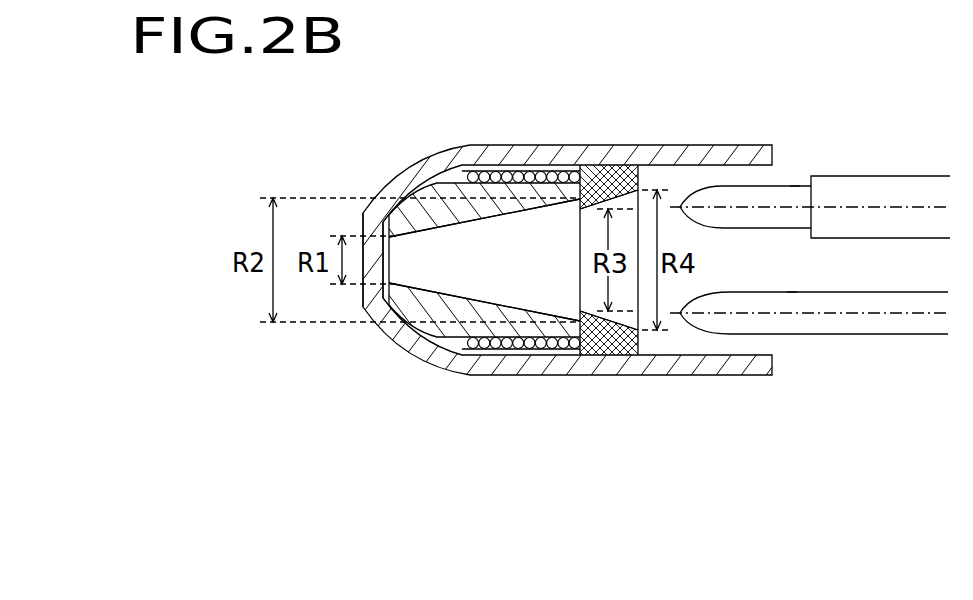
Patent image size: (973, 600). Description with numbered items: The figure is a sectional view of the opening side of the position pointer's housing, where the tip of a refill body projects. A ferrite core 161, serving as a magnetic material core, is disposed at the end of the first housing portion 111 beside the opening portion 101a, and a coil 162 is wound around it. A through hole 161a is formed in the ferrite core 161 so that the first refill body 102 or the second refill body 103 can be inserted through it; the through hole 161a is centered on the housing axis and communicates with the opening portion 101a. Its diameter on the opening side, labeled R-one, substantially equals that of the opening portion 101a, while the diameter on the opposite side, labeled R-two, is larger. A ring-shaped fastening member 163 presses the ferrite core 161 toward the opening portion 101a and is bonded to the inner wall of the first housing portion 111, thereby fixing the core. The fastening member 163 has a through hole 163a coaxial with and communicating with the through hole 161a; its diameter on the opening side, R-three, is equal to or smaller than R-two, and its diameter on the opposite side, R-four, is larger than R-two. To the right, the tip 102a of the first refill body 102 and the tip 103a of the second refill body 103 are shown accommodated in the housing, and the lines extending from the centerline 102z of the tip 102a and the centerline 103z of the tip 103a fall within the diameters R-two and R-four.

The first housing portion 111 is at (570, 155).
The ferrite core 161 is at (427, 205).
The through hole 161a is at (397, 213).
The coil 162 is at (503, 170).
The fastening member 163 is at (605, 356).
The through hole 163a is at (533, 352).
The opening portion 101a is at (373, 273).
The first refill body 102 is at (908, 188).
The tip of the first refill body 102a is at (708, 206).
The centerline of the tip of the first refill body 102z is at (795, 204).
The second refill body 103 is at (920, 335).
The tip of the second refill body 103a is at (703, 320).
The centerline of the tip of the second refill body 103z is at (792, 314).